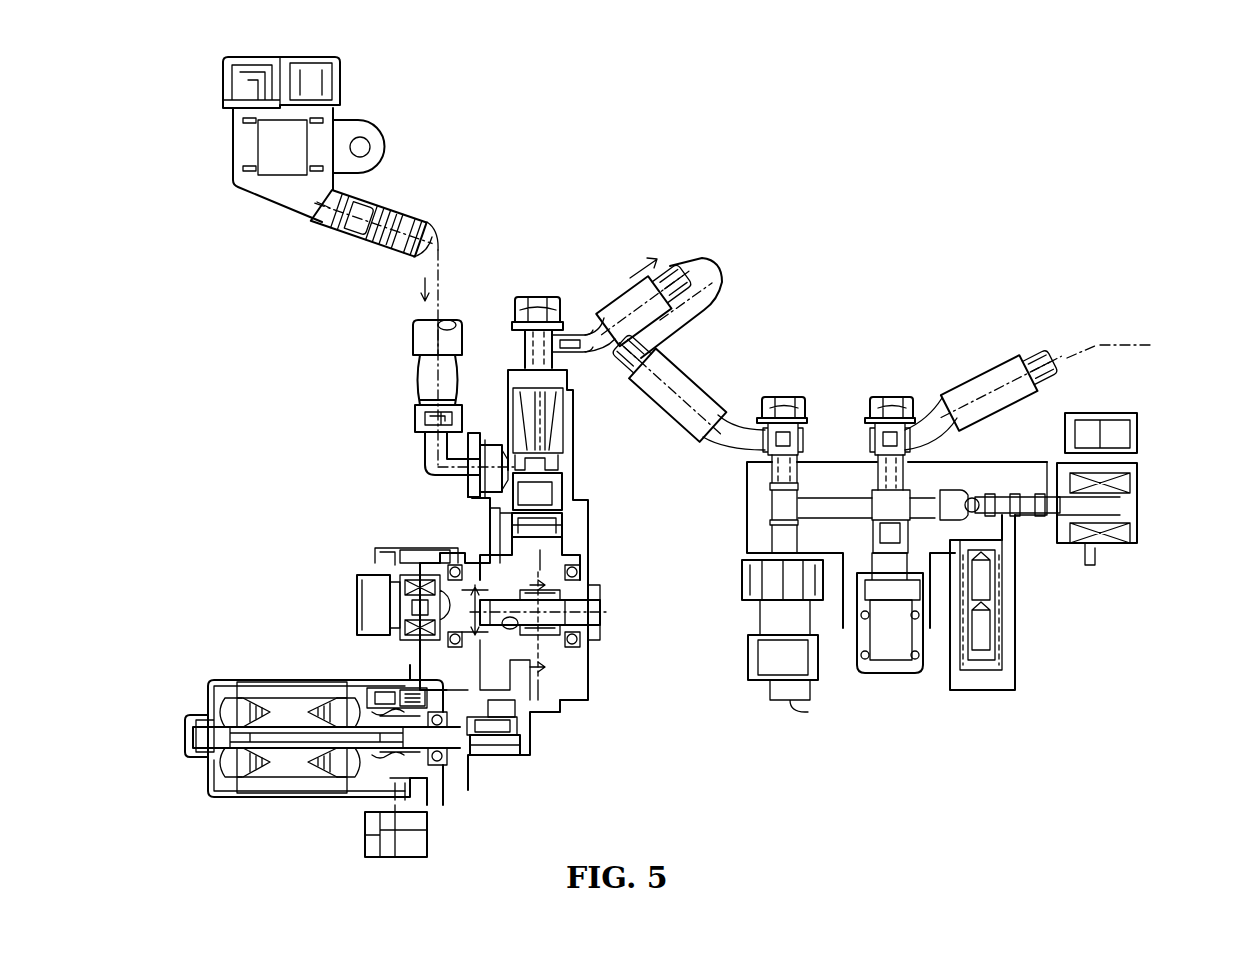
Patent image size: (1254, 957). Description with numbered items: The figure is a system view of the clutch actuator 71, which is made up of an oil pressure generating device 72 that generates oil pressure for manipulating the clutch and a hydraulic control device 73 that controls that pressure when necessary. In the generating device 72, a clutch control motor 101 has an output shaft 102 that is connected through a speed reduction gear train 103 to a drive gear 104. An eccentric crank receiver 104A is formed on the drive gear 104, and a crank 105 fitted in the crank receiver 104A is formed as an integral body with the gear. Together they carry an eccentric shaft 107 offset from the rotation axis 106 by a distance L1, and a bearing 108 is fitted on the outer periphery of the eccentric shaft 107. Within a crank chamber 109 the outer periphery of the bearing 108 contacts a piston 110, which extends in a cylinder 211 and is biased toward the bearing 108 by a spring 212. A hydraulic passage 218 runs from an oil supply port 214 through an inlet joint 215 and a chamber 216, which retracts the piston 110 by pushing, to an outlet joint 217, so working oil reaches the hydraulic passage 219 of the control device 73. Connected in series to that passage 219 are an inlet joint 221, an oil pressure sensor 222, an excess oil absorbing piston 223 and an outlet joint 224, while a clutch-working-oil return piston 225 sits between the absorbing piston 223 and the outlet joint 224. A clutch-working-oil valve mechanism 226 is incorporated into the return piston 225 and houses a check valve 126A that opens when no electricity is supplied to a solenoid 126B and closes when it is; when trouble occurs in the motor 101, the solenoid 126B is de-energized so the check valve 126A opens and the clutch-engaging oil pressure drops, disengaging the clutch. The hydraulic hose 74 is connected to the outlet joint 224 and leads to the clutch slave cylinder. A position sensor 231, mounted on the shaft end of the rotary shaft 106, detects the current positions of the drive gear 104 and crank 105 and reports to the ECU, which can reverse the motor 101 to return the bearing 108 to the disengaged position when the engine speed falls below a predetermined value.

The clutch actuator 71 is at (731, 181).
The oil pressure generating device 72 is at (192, 334).
The hydraulic control device 73 is at (965, 281).
The hydraulic hose 74 is at (1110, 345).
The clutch control motor 101 is at (325, 772).
The output shaft 102 is at (500, 750).
The speed reduction gear train 103 is at (522, 728).
The drive gear 104 is at (480, 748).
The crank receiver 104A is at (512, 625).
The crank 105 is at (560, 612).
The rotation axis 106 is at (415, 588).
The eccentric shaft 107 is at (532, 620).
The bearing 108 is at (552, 590).
The crank chamber 109 is at (503, 567).
The piston 110 is at (562, 528).
The check valve 126A is at (995, 495).
The solenoid 126B is at (1113, 467).
The cylinder 211 is at (555, 490).
The spring 212 is at (566, 414).
The oil supply port 214 is at (233, 146).
The inlet joint 215 is at (413, 362).
The chamber 216 is at (530, 408).
The outlet joint 217 is at (620, 302).
The hydraulic passage 218 is at (446, 268).
The hydraulic passage 219 is at (715, 308).
The inlet joint 221 is at (695, 391).
The oil pressure sensor 222 is at (780, 680).
The excess oil absorbing piston 223 is at (883, 670).
The outlet joint 224 is at (977, 406).
The clutch-working-oil return piston 225 is at (1003, 636).
The clutch-working-oil valve mechanism 226 is at (1085, 530).
The position sensor 231 is at (355, 630).
The distance L1 is at (460, 610).